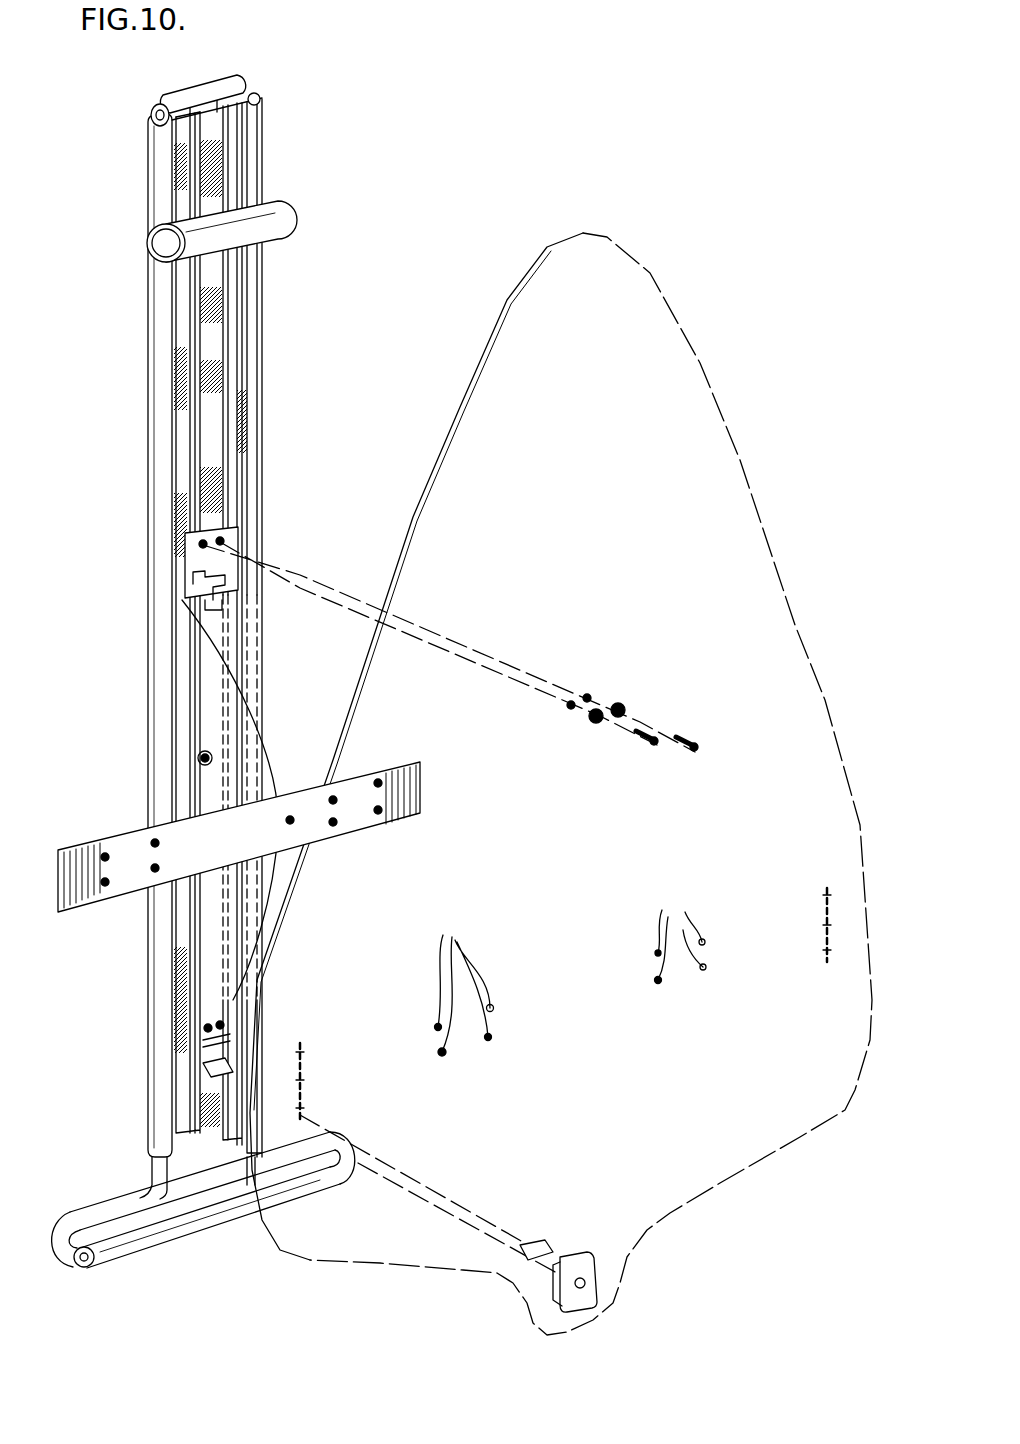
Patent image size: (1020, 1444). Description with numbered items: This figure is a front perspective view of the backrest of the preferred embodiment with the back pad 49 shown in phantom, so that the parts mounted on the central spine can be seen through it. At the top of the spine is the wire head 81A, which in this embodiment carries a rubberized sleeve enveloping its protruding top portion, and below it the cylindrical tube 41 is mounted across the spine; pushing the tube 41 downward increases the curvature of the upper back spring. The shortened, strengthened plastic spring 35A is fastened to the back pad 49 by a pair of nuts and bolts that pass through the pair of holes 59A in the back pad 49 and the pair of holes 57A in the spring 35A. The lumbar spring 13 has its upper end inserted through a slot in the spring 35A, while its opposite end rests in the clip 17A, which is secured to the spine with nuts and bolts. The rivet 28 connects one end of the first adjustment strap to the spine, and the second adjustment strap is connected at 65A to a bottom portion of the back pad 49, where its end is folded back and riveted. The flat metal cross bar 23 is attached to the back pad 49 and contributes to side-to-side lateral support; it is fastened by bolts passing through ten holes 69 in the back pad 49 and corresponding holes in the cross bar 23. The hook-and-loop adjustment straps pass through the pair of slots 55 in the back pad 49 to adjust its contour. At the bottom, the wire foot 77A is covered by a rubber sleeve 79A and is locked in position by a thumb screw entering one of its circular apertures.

The wire head 81A is at (247, 88).
The cylindrical tube 41 is at (288, 239).
The back pad 49 is at (686, 372).
The spring 35A is at (240, 538).
The holes 57A is at (220, 543).
The lumbar spring 13 is at (190, 597).
The holes 59A is at (606, 668).
The rivet 28 is at (198, 760).
The cross bar 23 is at (70, 905).
The clip 17A is at (222, 1028).
The slots 55 is at (308, 1068).
The holes 69 is at (571, 965).
The wire foot 77A is at (97, 1200).
The rubber sleeve 79A is at (187, 1240).
The connection of second adjustment strap to back pad 65A is at (600, 1262).